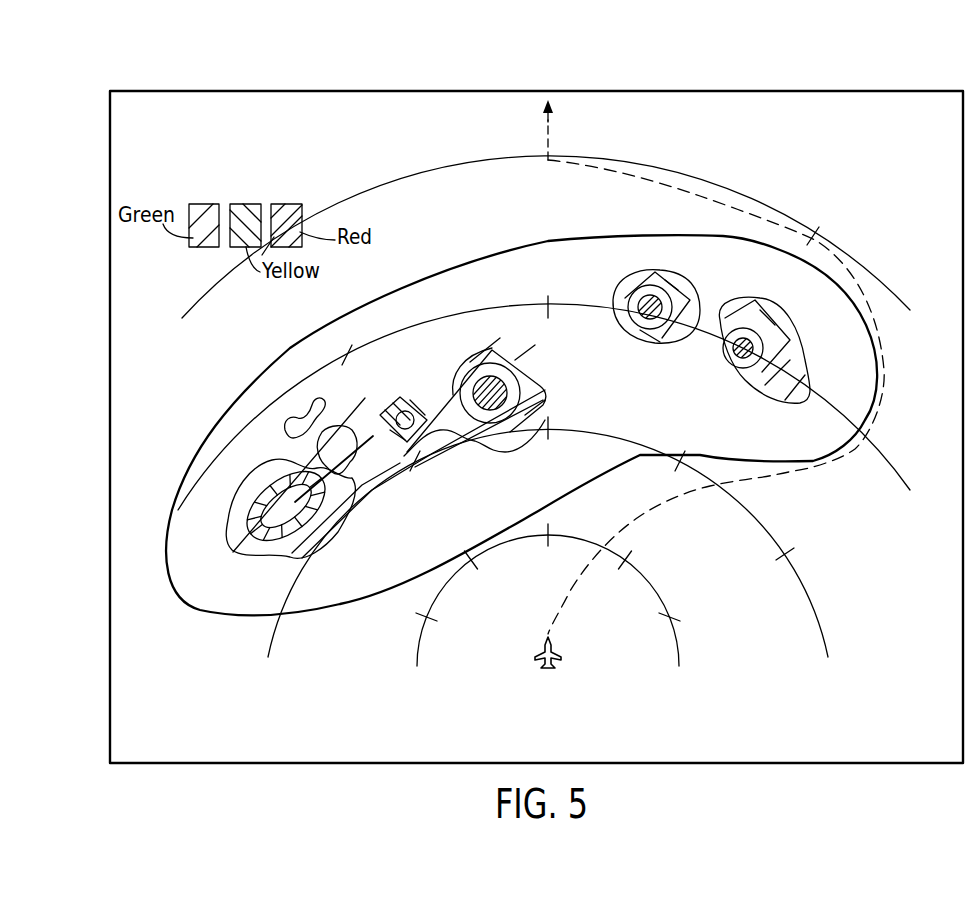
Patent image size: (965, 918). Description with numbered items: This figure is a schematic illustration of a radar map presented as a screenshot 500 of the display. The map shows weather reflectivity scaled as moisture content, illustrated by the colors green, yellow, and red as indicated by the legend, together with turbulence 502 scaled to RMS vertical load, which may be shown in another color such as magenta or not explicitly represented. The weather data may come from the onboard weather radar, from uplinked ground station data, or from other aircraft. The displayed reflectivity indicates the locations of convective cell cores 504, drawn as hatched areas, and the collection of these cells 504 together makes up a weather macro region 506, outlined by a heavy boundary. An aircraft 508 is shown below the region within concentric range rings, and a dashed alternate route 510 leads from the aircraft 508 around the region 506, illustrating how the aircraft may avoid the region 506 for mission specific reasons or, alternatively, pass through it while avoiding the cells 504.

The screenshot 500 is at (594, 74).
The turbulence 502 is at (336, 428).
The convective cell cores 504 is at (288, 493).
The weather macro region 506 is at (488, 257).
The aircraft 508 is at (533, 655).
The alternate route 510 is at (665, 194).